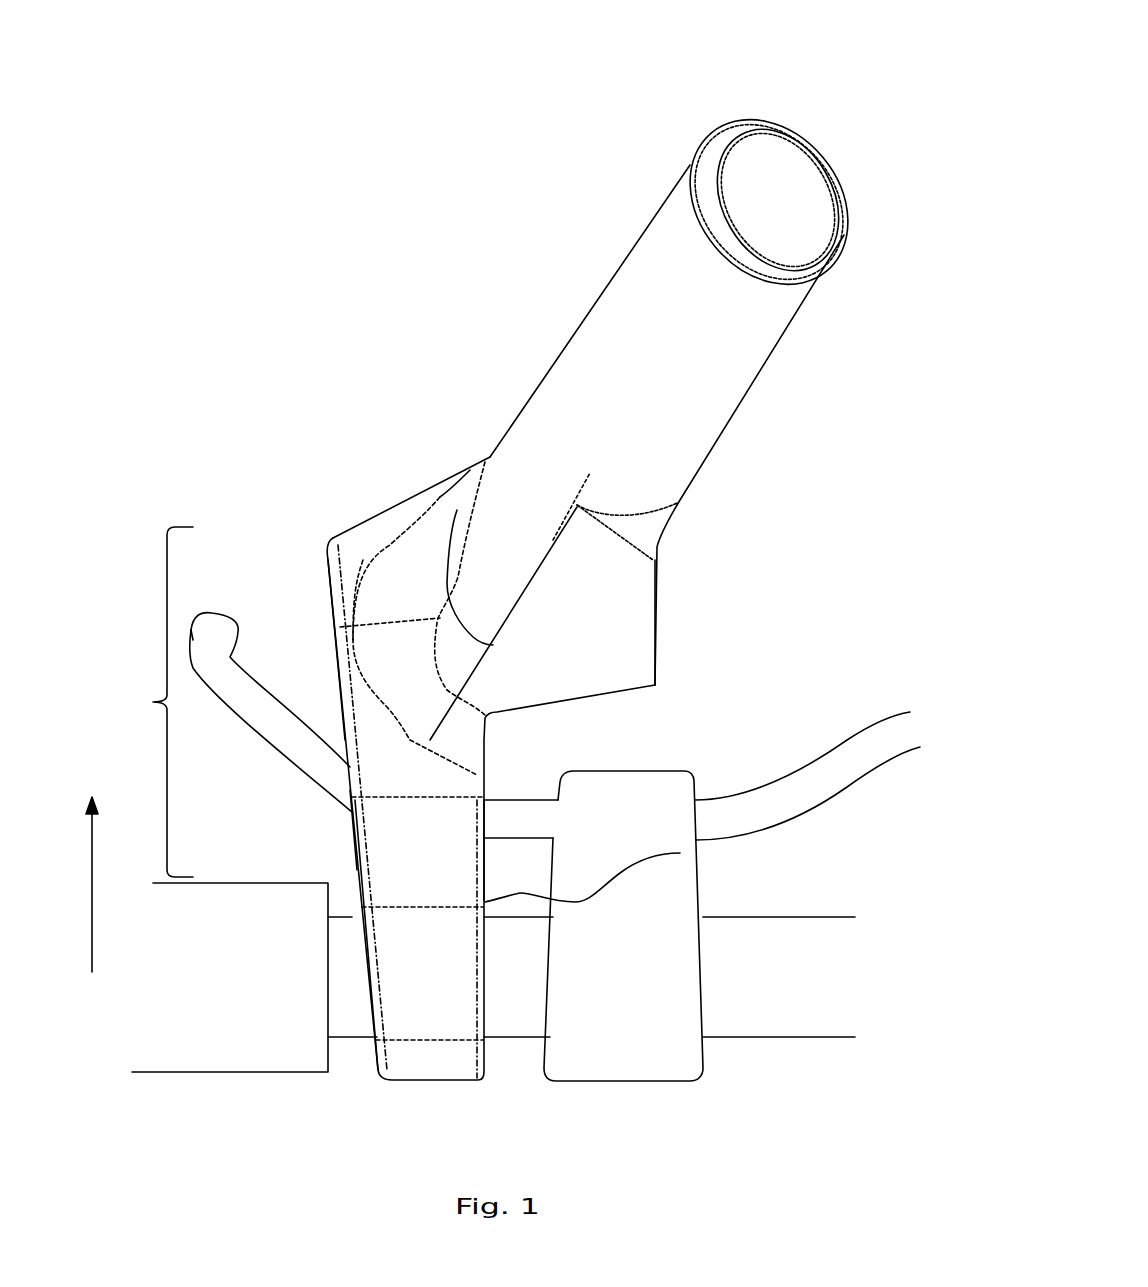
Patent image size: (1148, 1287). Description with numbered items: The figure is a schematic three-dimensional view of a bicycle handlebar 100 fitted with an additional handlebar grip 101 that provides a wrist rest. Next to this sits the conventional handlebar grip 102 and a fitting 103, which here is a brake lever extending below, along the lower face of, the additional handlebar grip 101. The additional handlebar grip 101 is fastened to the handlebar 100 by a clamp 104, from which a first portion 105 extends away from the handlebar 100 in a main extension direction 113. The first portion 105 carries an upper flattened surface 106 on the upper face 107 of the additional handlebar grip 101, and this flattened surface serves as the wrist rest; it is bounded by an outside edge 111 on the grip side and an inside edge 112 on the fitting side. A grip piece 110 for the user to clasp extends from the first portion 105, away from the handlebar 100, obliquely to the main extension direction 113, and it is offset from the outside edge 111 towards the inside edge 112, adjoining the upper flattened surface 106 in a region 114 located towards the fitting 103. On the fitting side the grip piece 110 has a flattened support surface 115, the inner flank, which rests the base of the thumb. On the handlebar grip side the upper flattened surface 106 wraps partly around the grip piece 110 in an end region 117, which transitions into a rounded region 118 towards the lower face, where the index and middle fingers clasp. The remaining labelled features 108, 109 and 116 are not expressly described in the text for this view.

The bicycle handlebar 100 is at (778, 1040).
The additional handlebar grip 101 is at (617, 220).
The conventional handlebar grip 102 is at (165, 1073).
The fitting 103 is at (677, 768).
The clamp 104 is at (380, 1040).
The first portion 105 is at (153, 702).
The upper flattened surface 106 is at (373, 767).
The upper face 107 is at (385, 473).
The gap 108 is at (490, 874).
The side surface 109 is at (336, 657).
The grip piece 110 is at (757, 387).
The outside edge 111 is at (355, 853).
The inside edge 112 is at (680, 853).
The main extension direction 113 is at (93, 920).
The region 114 is at (457, 510).
The flattened support surface 115 is at (612, 577).
The end cap 116 is at (707, 123).
The end region 117 is at (393, 562).
The rounded region 118 is at (422, 497).